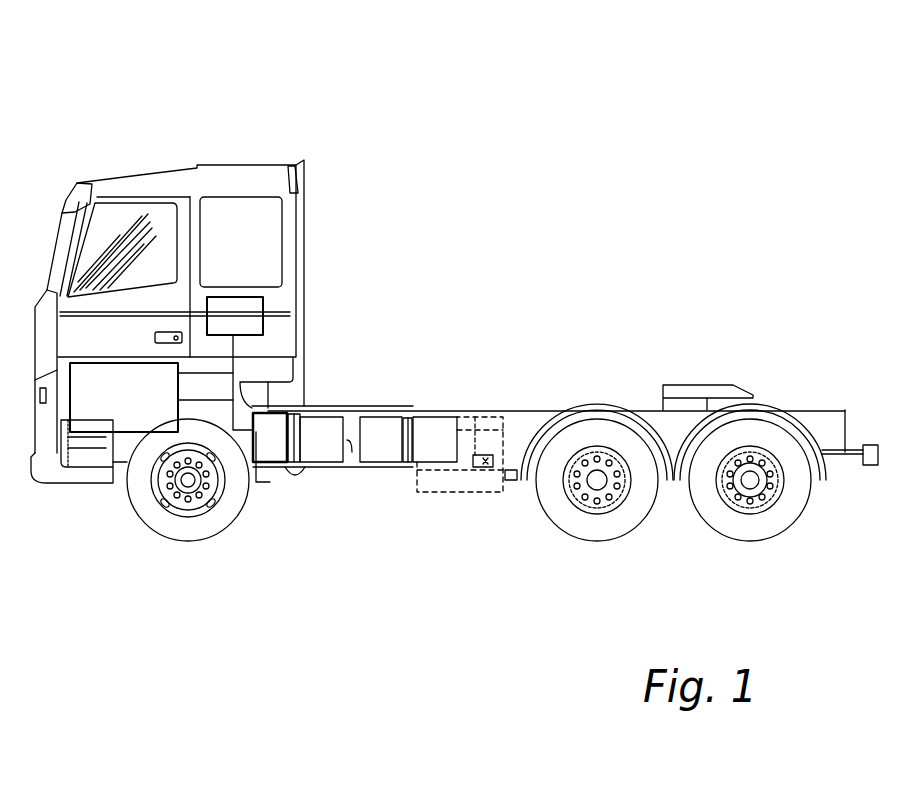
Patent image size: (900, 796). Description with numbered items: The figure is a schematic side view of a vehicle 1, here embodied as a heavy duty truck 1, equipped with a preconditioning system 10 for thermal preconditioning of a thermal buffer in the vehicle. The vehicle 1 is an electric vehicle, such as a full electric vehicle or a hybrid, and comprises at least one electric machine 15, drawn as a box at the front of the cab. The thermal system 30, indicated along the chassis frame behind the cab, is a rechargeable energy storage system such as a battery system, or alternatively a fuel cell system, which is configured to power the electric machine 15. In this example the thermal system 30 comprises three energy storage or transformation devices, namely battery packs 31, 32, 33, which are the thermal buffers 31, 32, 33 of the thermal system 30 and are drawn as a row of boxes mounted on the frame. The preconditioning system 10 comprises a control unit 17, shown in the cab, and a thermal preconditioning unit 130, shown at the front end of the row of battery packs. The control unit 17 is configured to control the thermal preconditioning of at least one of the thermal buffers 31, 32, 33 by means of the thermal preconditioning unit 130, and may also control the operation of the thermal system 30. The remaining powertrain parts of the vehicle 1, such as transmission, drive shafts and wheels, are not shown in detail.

The vehicle 1 is at (143, 108).
The preconditioning system 10 is at (304, 322).
The electric machine 15 is at (90, 433).
The control unit 17 is at (265, 302).
The thermal system 30 is at (395, 378).
The thermal preconditioning unit 130 is at (270, 463).
The battery pack 31 is at (320, 463).
The battery pack 32 is at (373, 463).
The battery pack 33 is at (430, 463).